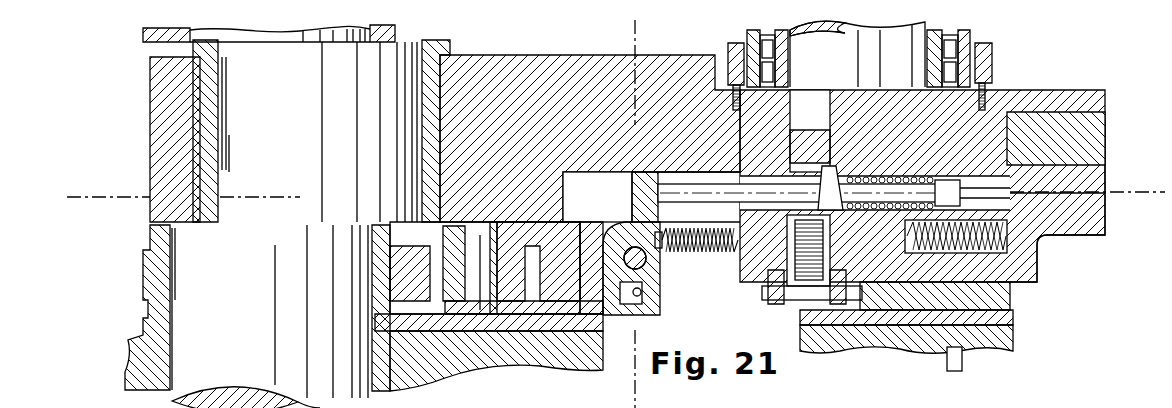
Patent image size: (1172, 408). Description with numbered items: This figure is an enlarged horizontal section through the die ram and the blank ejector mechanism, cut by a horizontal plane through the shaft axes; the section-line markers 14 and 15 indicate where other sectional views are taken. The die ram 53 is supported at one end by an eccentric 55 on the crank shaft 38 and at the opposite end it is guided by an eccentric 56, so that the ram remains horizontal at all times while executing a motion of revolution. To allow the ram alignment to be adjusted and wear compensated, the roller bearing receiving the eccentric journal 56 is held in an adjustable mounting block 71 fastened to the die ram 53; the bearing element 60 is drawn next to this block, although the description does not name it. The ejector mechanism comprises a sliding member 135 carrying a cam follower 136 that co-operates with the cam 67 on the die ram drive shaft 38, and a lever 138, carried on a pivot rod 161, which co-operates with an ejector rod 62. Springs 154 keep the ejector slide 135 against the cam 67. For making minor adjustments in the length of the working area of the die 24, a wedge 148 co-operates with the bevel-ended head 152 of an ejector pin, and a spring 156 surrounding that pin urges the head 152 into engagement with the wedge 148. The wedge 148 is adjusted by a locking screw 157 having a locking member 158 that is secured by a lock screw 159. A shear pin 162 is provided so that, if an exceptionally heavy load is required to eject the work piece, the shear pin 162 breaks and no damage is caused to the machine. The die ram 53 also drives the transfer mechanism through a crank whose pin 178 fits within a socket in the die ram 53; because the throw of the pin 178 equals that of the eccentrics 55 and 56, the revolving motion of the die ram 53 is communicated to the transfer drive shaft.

The section line 14- 14 is at (77, 205).
The section line 15- 15 is at (622, 28).
The die 24 is at (1106, 212).
The crank shaft 38 is at (152, 392).
The die ram 53 is at (522, 67).
The eccentric 55 is at (238, 113).
The eccentric 56 is at (898, 50).
The bearing assembly 60 is at (973, 33).
The ejector rod 62 is at (700, 256).
The cam 67 is at (143, 272).
The adjustable mounting block 71 is at (994, 60).
The sliding member 135 is at (598, 317).
The cam follower 136 is at (443, 287).
The lever 138 is at (632, 190).
The wedge 148 is at (800, 136).
The bevel ended head 152 is at (836, 176).
The spring 154 is at (700, 257).
The spring 156 is at (889, 180).
The locking screw 157 is at (830, 250).
The locking member 158 is at (762, 289).
The lock screw 159 is at (783, 302).
The pivot rod 161 is at (660, 255).
The shear pin 162 is at (648, 294).
The pin 178 is at (962, 361).